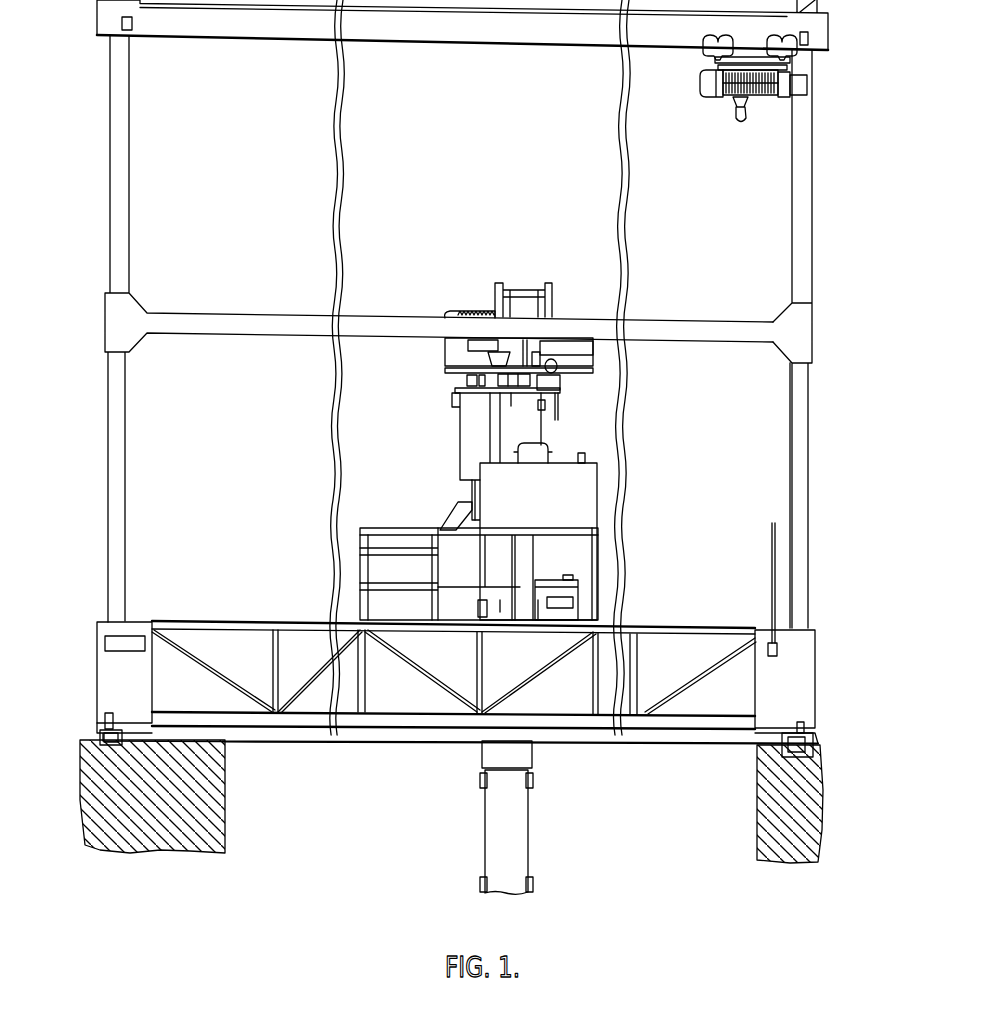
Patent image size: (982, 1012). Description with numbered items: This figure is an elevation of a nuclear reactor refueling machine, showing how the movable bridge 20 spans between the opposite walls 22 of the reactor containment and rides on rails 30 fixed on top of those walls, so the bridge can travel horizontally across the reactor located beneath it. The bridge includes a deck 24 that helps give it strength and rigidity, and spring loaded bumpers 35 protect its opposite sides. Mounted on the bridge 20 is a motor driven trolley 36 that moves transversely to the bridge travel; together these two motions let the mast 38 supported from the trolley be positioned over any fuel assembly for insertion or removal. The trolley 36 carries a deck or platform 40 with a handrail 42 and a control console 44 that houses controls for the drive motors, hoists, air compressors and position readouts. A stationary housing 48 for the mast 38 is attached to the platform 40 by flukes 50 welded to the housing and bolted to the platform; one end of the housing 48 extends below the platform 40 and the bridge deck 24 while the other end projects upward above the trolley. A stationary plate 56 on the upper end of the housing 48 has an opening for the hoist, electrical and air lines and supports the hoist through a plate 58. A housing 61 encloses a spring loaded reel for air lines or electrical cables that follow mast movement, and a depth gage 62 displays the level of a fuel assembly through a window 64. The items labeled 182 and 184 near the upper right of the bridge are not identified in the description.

The movable bridge 20 is at (679, 621).
The walls of reactor containment 22 is at (215, 787).
The deck 24 is at (587, 729).
The rails 30 is at (116, 730).
The spring loaded bumpers 35 is at (110, 713).
The motor driven trolley 36 is at (605, 558).
The mast 38 is at (535, 845).
The platform 40 is at (400, 620).
The handrail 42 is at (388, 530).
The control console 44 is at (454, 514).
The mast housing 48 is at (535, 560).
The flukes 50 is at (478, 610).
The stationary plate 56 is at (547, 414).
The plate 58 is at (560, 379).
The housing 61 is at (560, 366).
The depth gage 62 is at (462, 365).
The window 64 is at (460, 379).
The hoist 182 is at (700, 80).
The hook 184 is at (741, 123).